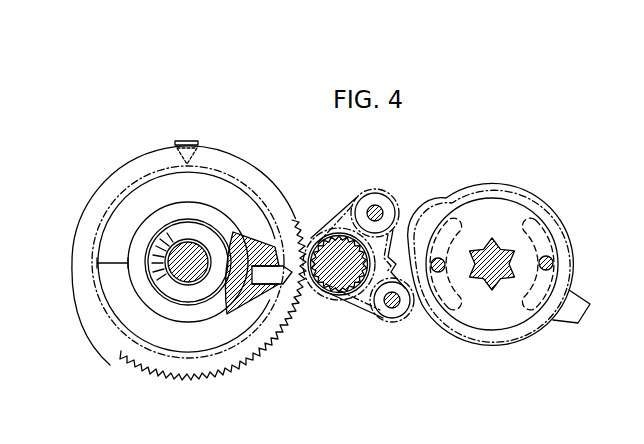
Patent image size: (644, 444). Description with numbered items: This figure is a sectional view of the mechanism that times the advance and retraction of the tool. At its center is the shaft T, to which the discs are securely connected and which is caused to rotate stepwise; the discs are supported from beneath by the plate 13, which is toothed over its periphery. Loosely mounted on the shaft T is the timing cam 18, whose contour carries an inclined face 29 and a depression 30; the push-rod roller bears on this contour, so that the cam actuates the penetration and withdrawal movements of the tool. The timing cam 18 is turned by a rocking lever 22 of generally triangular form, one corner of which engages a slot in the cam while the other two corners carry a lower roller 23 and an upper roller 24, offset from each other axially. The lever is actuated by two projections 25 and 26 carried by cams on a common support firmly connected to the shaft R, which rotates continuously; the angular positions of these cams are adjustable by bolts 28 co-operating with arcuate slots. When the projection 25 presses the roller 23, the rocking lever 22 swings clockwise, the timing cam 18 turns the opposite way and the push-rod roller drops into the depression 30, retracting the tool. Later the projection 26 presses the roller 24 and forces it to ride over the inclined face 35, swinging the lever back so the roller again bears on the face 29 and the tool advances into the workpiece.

The plate 13 is at (253, 181).
The timing cam 18 is at (238, 254).
The rocking lever 22 is at (358, 313).
The roller 23 is at (397, 320).
The roller 24 is at (377, 193).
The projection 25 is at (398, 230).
The projection 26 is at (573, 307).
The bolts 28 is at (547, 256).
The face 29 is at (140, 328).
The depression 30 is at (110, 233).
The inclined face 35 is at (583, 283).
The shaft R is at (498, 282).
The shaft T is at (193, 270).